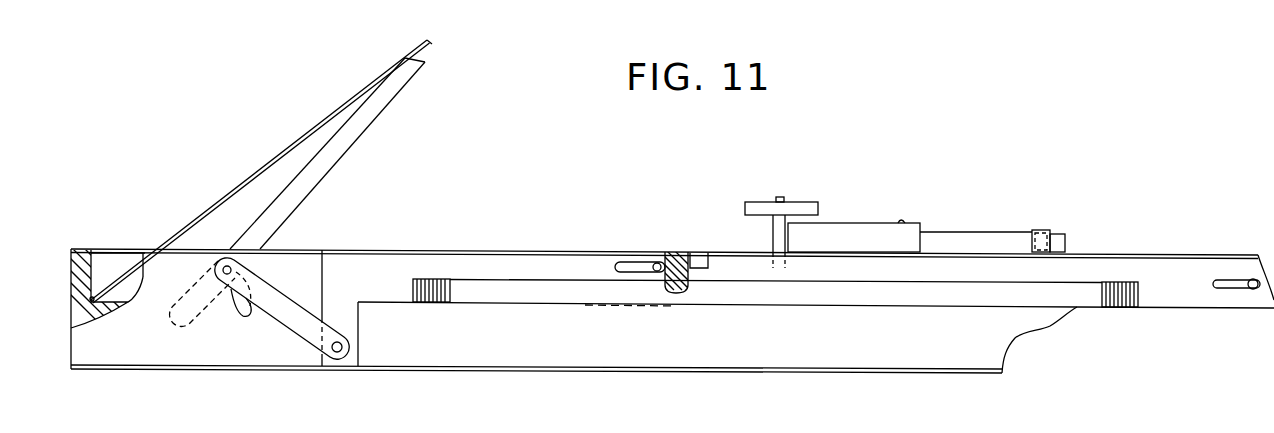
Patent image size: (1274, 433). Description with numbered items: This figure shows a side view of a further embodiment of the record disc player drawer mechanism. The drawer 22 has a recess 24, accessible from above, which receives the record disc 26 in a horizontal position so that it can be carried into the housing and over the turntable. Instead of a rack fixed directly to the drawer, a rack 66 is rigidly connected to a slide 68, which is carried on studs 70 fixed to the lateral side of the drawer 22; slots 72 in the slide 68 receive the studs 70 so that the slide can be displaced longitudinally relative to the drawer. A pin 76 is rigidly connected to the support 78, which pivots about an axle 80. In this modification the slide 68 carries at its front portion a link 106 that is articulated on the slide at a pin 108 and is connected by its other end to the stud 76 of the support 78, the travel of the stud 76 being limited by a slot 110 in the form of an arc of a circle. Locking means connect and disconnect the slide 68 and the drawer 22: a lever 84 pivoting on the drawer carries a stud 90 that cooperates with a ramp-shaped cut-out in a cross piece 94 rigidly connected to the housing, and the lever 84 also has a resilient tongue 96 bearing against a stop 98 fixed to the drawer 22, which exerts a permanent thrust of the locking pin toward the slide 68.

The drawer 22 is at (603, 378).
The recess 24 is at (108, 263).
The record disc 26 is at (252, 170).
The rack 66 is at (445, 303).
The slide 68 is at (520, 266).
The studs 70 is at (1248, 280).
The slots 72 is at (1218, 278).
The pin 76 is at (227, 266).
The support 78 is at (345, 147).
The axle 80 is at (183, 322).
The lever 84 is at (873, 232).
The stud 90 is at (786, 198).
The cross piece 94 is at (750, 206).
The resilient tongue 96 is at (978, 240).
The stop 98 is at (1058, 236).
The link 106 is at (290, 320).
The pin 108 is at (350, 360).
The slot 110 is at (238, 312).